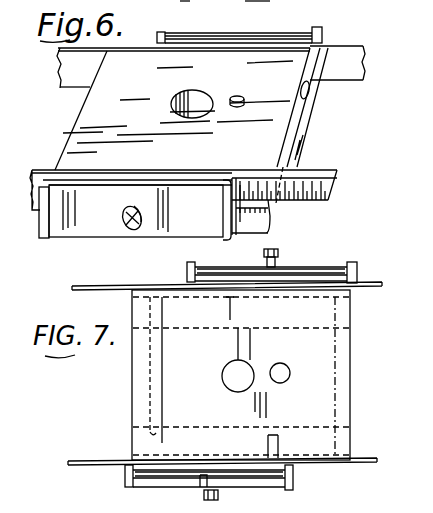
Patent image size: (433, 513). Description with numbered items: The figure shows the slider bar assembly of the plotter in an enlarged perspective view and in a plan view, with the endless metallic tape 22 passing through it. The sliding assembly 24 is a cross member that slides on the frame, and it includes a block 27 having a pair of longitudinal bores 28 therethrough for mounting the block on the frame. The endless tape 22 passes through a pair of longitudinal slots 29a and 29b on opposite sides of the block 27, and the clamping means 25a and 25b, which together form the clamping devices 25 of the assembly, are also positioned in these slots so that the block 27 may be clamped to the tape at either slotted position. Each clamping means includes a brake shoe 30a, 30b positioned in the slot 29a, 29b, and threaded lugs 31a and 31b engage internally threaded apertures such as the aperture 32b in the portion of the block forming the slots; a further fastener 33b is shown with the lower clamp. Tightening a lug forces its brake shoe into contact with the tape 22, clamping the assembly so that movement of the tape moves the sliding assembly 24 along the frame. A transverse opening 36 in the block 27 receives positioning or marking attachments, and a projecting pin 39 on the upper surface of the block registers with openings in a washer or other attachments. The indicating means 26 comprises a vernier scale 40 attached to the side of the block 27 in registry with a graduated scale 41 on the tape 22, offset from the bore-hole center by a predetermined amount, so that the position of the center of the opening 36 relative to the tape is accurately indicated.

In FIG. 6, the endless tape 22 is at (358, 62).
In FIG. 6, the sliding assembly 24 is at (316, 122).
In FIG. 6, the guide rail 25 is at (185, 6).
In FIG. 6, the clamping means 25a is at (218, 30).
In FIG. 7, the clamping means 25a is at (362, 267).
In FIG. 6, the clamping means 25b is at (92, 241).
In FIG. 7, the clamping means 25b is at (238, 490).
In FIG. 6, the indicating means 26 is at (286, 218).
In FIG. 6, the block 27 is at (137, 85).
In FIG. 6, the longitudinal bores 28 is at (310, 90).
In FIG. 7, the longitudinal bores 28 is at (145, 334).
In FIG. 7, the longitudinal slot 29a is at (333, 272).
In FIG. 7, the longitudinal slot 29b is at (148, 473).
In FIG. 6, the brake shoe 30a is at (323, 33).
In FIG. 7, the brake shoe 30a is at (360, 284).
In FIG. 6, the brake shoe 30b is at (220, 217).
In FIG. 7, the brake shoe 30b is at (294, 478).
In FIG. 7, the threaded lug 31a is at (288, 262).
In FIG. 6, the threaded lug 31b is at (122, 215).
In FIG. 7, the threaded lug 31b is at (221, 490).
In FIG. 7, the internally threaded aperture 32b is at (263, 268).
In FIG. 6, the rail fastener 33b is at (259, 8).
In FIG. 6, the transverse opening 36 is at (199, 98).
In FIG. 7, the transverse opening 36 is at (222, 380).
In FIG. 6, the projecting pin 39 is at (243, 98).
In FIG. 7, the projecting pin 39 is at (291, 371).
In FIG. 6, the vernier scale 40 is at (242, 222).
In FIG. 7, the vernier scale 40 is at (160, 284).
In FIG. 6, the graduated scale 41 is at (318, 186).